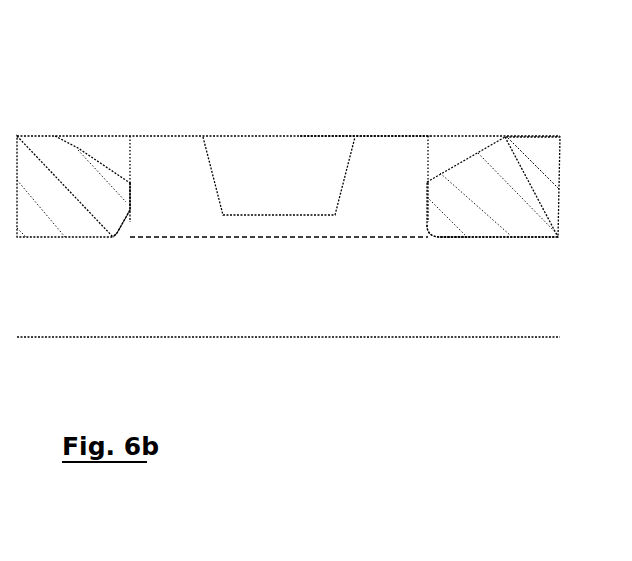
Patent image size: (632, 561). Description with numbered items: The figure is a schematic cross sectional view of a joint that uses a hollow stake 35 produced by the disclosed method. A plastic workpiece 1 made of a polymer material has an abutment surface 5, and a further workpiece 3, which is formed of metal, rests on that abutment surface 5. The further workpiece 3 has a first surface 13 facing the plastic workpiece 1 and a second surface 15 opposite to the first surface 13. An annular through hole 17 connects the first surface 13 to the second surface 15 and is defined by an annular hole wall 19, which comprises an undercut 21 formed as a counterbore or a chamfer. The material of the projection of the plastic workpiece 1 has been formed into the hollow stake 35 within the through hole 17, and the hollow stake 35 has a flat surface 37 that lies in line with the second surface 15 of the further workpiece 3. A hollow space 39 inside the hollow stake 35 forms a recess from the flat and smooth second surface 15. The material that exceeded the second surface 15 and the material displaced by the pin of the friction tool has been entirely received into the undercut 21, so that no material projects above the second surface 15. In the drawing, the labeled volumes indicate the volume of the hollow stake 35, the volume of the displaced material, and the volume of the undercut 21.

The plastic workpiece 1 is at (552, 297).
The further workpiece 3 is at (545, 178).
The abutment surface 5 is at (516, 237).
The first surface 13 is at (471, 237).
The second surface 15 is at (534, 138).
The through hole 17 is at (130, 210).
The hole wall 19 is at (428, 200).
The undercut 21 is at (86, 145).
The hollow stake 35 is at (385, 181).
The flat surface 37 is at (380, 137).
The hollow space 39 is at (296, 157).